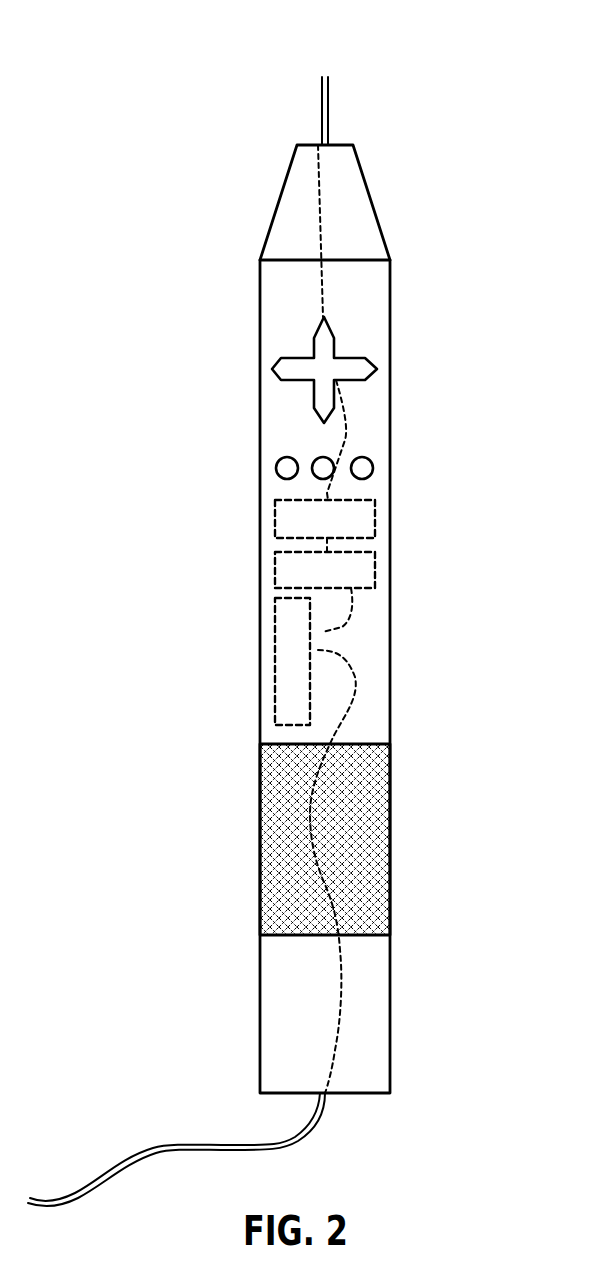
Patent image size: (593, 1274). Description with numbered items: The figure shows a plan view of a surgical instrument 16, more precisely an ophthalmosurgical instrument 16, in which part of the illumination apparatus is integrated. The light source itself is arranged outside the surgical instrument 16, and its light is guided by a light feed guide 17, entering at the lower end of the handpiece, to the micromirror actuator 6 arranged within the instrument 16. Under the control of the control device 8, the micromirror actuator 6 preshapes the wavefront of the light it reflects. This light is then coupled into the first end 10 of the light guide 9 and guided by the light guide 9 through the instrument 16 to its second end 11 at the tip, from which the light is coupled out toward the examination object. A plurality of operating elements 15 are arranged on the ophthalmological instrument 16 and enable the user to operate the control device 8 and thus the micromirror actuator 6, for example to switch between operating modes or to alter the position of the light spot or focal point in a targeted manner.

The surgical instrument 16 is at (224, 322).
The second end 11 is at (328, 78).
The light guide 9 is at (350, 423).
The operating elements 15 is at (322, 365).
The control device 8 is at (305, 570).
The micromirror actuator 6 is at (295, 690).
The first end 10 is at (323, 632).
The light feed guide 17 is at (133, 1147).